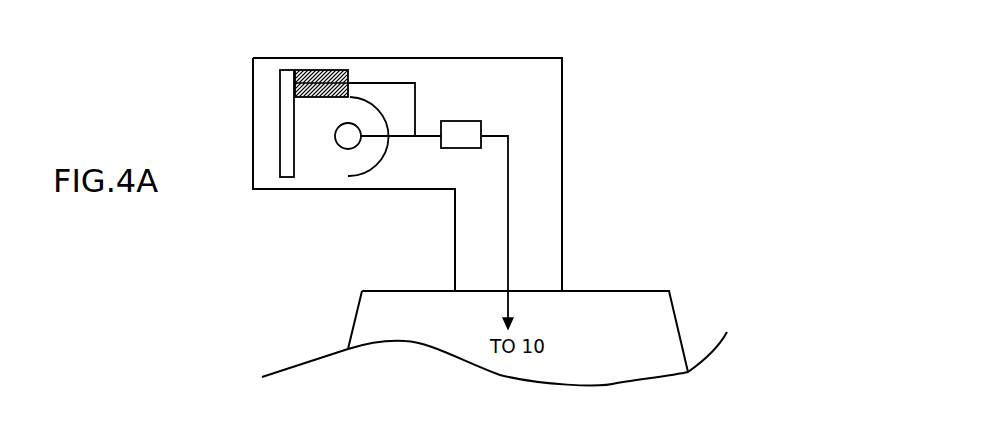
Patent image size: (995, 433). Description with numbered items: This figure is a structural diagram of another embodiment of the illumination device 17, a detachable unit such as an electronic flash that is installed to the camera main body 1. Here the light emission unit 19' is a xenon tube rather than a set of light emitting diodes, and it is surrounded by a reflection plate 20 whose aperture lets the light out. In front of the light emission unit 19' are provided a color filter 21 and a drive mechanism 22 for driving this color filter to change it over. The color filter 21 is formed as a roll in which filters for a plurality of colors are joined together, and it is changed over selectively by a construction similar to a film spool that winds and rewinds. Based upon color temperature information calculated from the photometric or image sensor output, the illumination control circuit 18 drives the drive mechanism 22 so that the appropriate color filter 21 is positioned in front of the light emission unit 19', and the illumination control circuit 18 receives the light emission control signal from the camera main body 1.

The camera main body 1 is at (672, 297).
The illumination device 17 is at (562, 67).
The illumination control circuit 18 is at (462, 121).
The light emission unit 19' is at (324, 186).
The reflection plate 20 is at (375, 163).
The color filter 21 is at (287, 85).
The drive mechanism 22 is at (340, 71).